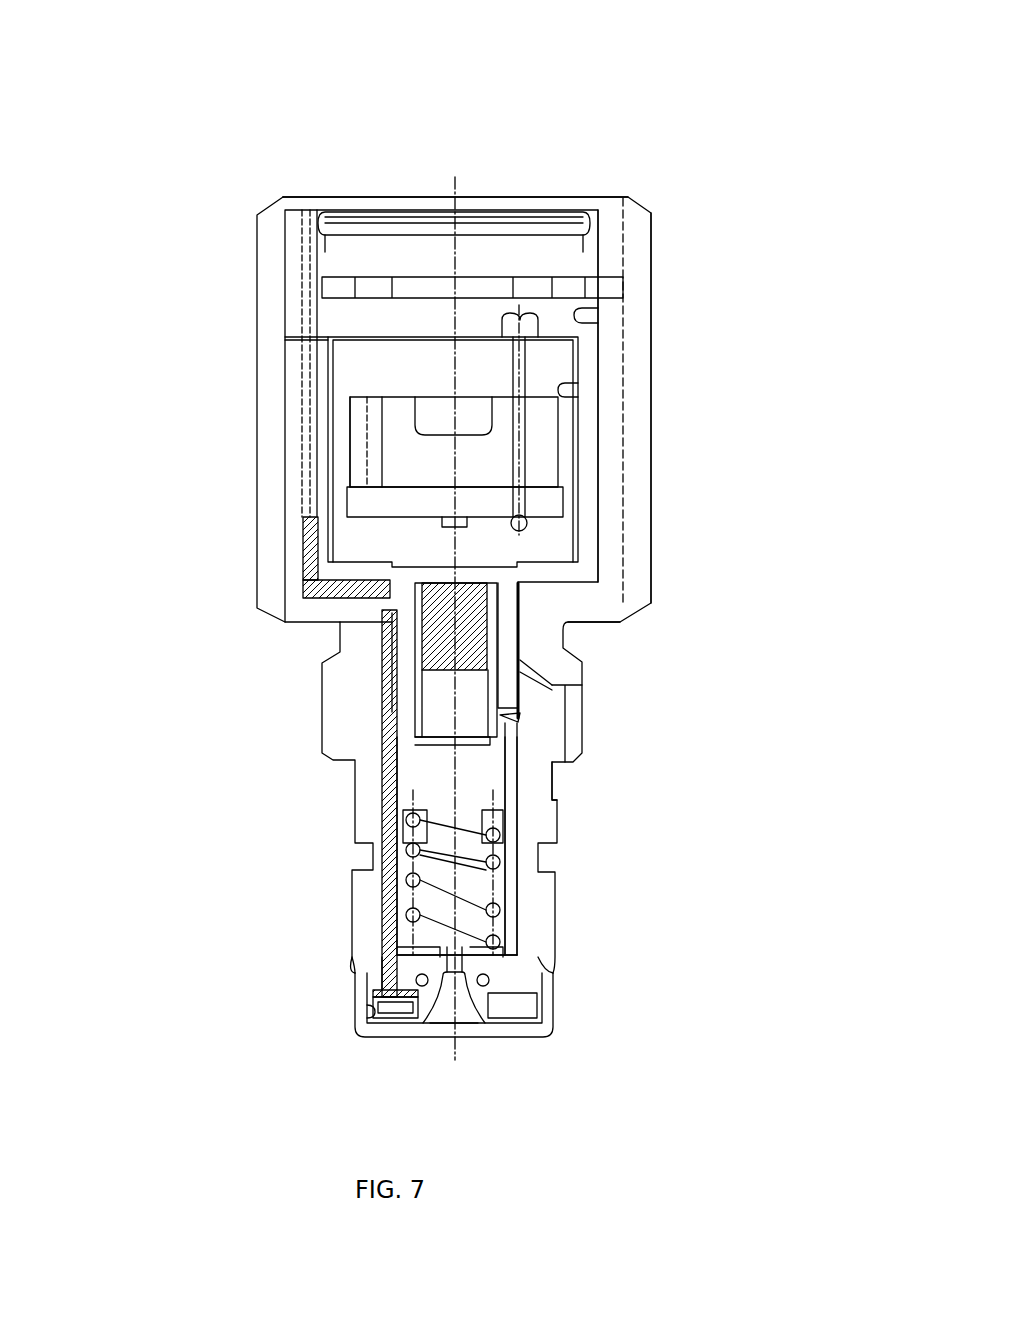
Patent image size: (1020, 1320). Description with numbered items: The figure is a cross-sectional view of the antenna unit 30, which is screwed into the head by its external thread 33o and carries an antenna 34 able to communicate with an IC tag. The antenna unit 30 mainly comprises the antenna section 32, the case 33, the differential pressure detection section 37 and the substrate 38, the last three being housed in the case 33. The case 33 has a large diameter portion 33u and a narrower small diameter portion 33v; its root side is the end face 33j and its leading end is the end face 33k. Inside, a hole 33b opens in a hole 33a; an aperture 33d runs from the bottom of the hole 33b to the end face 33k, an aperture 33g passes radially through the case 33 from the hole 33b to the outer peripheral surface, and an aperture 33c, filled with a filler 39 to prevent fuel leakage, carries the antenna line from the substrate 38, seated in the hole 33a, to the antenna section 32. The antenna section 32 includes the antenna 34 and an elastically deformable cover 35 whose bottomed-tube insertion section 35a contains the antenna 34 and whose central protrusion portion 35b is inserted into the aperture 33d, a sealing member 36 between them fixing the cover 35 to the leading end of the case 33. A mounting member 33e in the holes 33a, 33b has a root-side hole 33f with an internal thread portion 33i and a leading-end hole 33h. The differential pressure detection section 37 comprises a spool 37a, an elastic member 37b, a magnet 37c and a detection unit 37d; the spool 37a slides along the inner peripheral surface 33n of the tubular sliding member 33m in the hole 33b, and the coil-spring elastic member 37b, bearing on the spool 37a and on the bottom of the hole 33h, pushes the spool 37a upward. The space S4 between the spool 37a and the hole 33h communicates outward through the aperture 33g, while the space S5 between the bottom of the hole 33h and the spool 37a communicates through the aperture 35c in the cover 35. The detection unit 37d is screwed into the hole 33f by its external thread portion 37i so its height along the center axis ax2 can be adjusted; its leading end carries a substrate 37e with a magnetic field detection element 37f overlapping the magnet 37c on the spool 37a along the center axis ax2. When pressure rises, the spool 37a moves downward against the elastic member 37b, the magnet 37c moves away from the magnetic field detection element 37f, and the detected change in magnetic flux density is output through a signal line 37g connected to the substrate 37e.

The antenna unit 30 is at (702, 67).
The antenna section 32 is at (493, 1016).
The case 33 is at (640, 232).
The hole 33a is at (595, 315).
The hole 33b is at (507, 717).
The aperture 33c is at (317, 262).
The aperture 33d is at (440, 943).
The mounting member 33e is at (593, 355).
The hole 33f is at (563, 393).
The aperture 33g is at (550, 680).
The hole 33h is at (605, 615).
The internal thread portion 33i is at (332, 353).
The end face 33j is at (612, 197).
The end face 33k is at (513, 993).
The sliding member 33m is at (512, 833).
The inner peripheral surface 33n is at (493, 883).
The external thread 33o is at (573, 718).
The large diameter portion 33u is at (652, 460).
The small diameter portion 33v is at (555, 802).
The antenna 34 is at (513, 1007).
The cover 35 is at (523, 1032).
The insertion section 35a is at (377, 1010).
The protrusion portion 35b is at (423, 1020).
The aperture 35c is at (468, 1028).
The sealing member 36 is at (373, 987).
The differential pressure detection section 37 is at (158, 747).
The spool 37a is at (433, 690).
The elastic member 37b is at (397, 813).
The magnet 37c is at (415, 593).
The detection unit 37d is at (345, 445).
The substrate 37e is at (358, 512).
The magnetic field detection element 37f is at (445, 525).
The signal line 37g is at (523, 410).
The external thread portion 37i is at (337, 423).
The substrate 38 is at (495, 287).
The filler 39 is at (387, 967).
The space S4 is at (345, 622).
The space S5 is at (430, 867).
The center axis ax2 is at (455, 177).